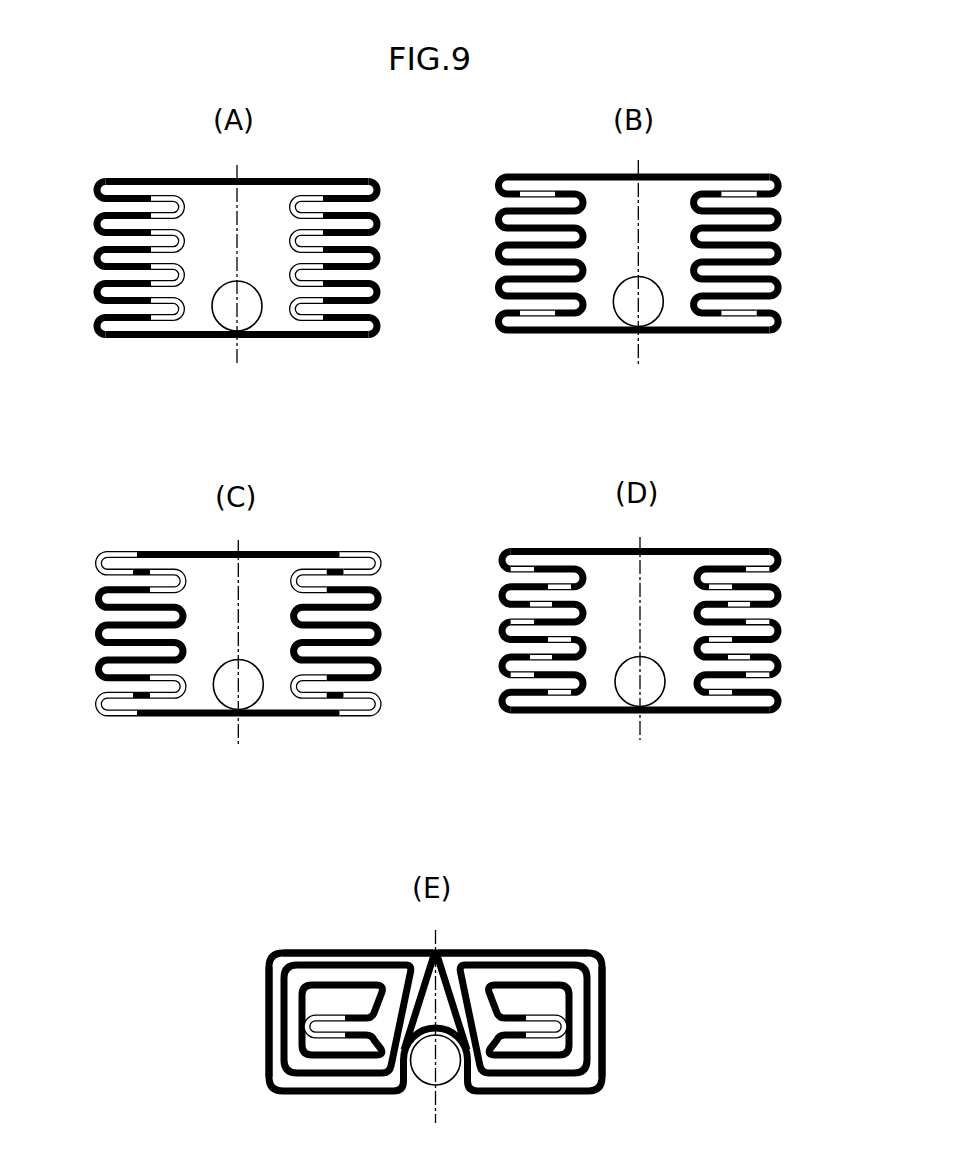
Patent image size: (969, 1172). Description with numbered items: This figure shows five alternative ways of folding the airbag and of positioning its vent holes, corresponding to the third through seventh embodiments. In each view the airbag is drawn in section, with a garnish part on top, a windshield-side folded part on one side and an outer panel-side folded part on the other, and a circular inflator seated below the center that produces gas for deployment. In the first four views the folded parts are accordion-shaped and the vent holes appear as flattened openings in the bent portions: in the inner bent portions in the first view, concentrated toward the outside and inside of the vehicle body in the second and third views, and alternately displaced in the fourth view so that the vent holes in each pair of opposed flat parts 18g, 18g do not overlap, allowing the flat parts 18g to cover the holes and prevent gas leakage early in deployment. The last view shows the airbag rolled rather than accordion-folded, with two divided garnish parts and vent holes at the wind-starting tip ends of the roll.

The flat part 18g is at (739, 640).